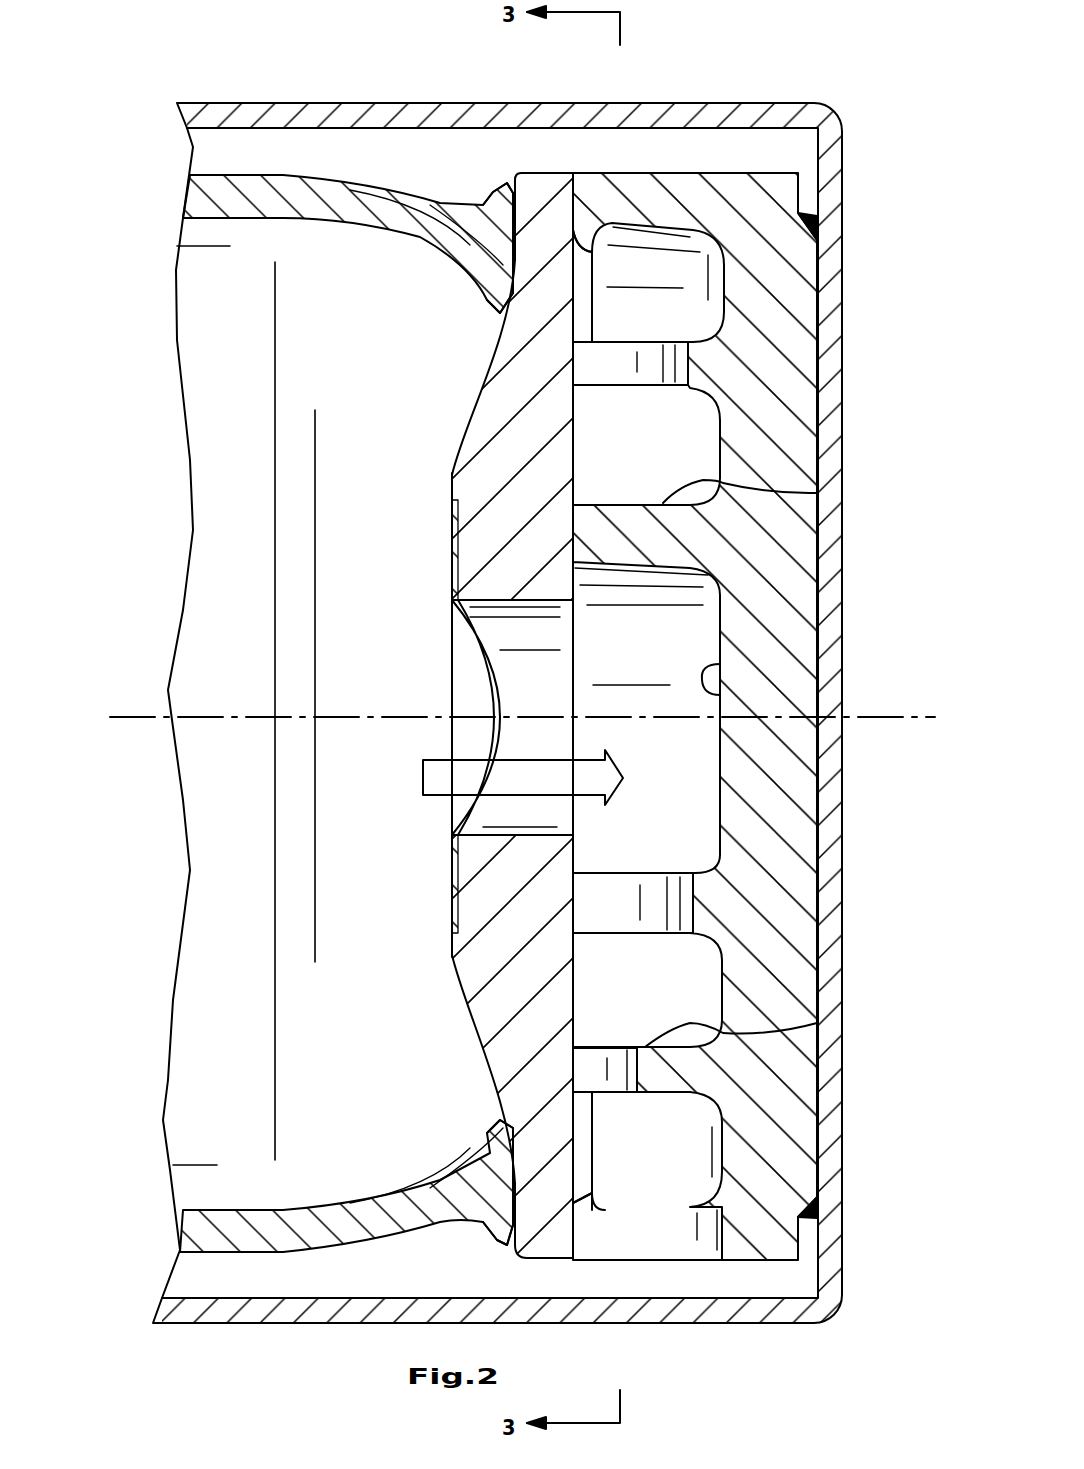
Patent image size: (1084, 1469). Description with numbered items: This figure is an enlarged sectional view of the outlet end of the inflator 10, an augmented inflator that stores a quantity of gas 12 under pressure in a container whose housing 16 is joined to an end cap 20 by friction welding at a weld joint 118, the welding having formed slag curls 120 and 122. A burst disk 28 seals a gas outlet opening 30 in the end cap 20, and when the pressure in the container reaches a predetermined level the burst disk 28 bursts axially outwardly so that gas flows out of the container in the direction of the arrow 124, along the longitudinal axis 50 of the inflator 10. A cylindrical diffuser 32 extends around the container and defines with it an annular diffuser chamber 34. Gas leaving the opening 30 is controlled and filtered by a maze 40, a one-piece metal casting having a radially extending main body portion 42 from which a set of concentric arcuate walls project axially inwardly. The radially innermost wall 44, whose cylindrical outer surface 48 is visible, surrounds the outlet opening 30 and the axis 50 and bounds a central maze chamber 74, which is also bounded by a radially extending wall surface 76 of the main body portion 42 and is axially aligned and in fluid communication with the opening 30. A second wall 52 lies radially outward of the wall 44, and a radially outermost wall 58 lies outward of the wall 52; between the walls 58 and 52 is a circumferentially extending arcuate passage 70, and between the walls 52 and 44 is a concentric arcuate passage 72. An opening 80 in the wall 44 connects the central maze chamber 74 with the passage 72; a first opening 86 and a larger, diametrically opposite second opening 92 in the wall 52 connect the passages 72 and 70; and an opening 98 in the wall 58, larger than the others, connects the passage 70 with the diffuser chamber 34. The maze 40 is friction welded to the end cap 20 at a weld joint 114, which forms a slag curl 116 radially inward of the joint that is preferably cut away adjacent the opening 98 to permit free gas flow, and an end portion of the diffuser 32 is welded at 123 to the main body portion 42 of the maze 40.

The inflator 10 is at (125, 990).
The gas 12 is at (247, 478).
The housing 16 is at (220, 228).
The end cap 20 is at (546, 165).
The burst disk 28 is at (490, 682).
The gas outlet opening 30 is at (465, 628).
The diffuser 32 is at (282, 103).
The diffuser chamber 34 is at (293, 1274).
The maze 40 is at (634, 162).
The main body portion 42 is at (777, 617).
The radially innermost wall 44 is at (663, 537).
The cylindrical outer surface 48 is at (820, 493).
The longitudinal axis 50 is at (215, 717).
The second wall 52 is at (672, 1070).
The radially outermost wall 58 is at (677, 203).
The arcuate passage 70 is at (675, 268).
The arcuate passage 72 is at (673, 458).
The central maze chamber 74 is at (670, 787).
The radially extending wall surface 76 is at (712, 668).
The opening 80 is at (657, 900).
The first opening 86 is at (700, 1035).
The second opening 92 is at (655, 368).
The opening 98 is at (665, 1240).
The weld joint 114 is at (580, 187).
The slag curl 116 is at (592, 232).
The weld joint 118 is at (480, 222).
The slag curl 120 is at (497, 192).
The slag curl 122 is at (492, 298).
The weld 123 is at (830, 1210).
The arrow 124 is at (528, 782).